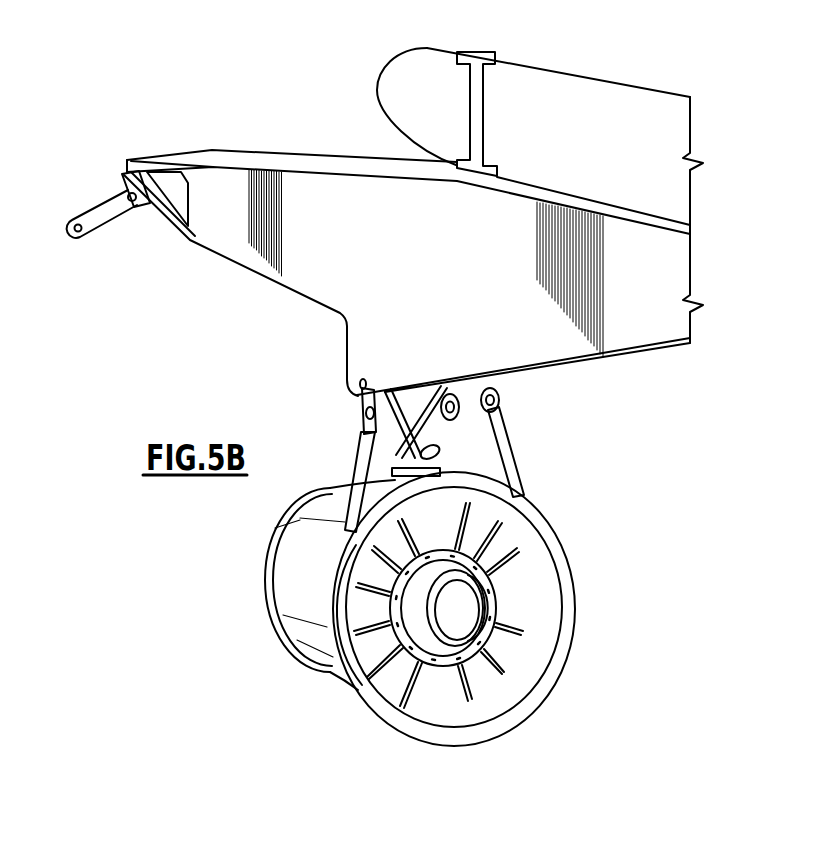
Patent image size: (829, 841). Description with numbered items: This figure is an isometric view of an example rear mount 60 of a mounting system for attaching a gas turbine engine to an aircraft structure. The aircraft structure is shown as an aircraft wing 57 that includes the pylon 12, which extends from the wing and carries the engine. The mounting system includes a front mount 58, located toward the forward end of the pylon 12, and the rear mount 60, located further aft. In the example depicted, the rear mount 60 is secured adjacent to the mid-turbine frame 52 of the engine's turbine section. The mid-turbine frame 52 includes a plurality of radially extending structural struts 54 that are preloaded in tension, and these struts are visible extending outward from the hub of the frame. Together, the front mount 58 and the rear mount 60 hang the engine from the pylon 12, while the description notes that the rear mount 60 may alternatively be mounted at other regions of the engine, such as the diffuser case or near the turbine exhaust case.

The pylon 12 is at (285, 185).
The aircraft wing 57 is at (616, 110).
The front mount 58 is at (103, 218).
The rear mount 60 is at (466, 378).
The mid-turbine frame 52 is at (482, 642).
The structural struts 54 is at (400, 695).